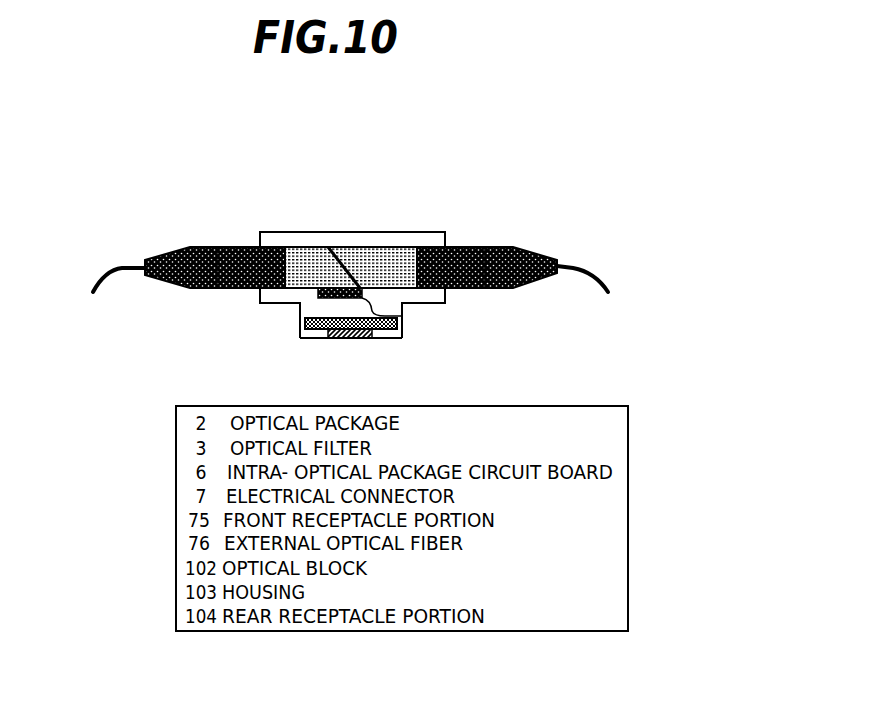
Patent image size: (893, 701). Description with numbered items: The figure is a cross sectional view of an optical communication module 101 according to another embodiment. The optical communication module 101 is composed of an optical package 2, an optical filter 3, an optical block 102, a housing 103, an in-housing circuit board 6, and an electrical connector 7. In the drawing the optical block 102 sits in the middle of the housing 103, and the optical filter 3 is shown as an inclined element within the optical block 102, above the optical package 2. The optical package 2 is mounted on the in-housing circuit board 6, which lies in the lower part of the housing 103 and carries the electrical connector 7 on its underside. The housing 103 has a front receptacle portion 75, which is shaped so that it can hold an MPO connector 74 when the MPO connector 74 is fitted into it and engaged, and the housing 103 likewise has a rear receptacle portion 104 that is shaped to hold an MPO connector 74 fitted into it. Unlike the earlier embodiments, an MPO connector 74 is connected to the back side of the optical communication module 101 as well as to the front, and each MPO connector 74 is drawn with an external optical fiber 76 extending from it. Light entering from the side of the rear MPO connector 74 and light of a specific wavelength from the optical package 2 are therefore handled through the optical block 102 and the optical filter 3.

The optical package 2 is at (318, 298).
The optical filter 3 is at (330, 247).
The in-housing circuit board 6 is at (315, 338).
The electrical connector 7 is at (348, 338).
The MPO connector 74 is at (191, 247).
The front receptacle portion 75 is at (275, 232).
The external optical fiber 76 is at (113, 273).
The optical communication module 101 is at (290, 146).
The optical block 102 is at (353, 247).
The housing 103 is at (382, 232).
The rear receptacle portion 104 is at (441, 232).